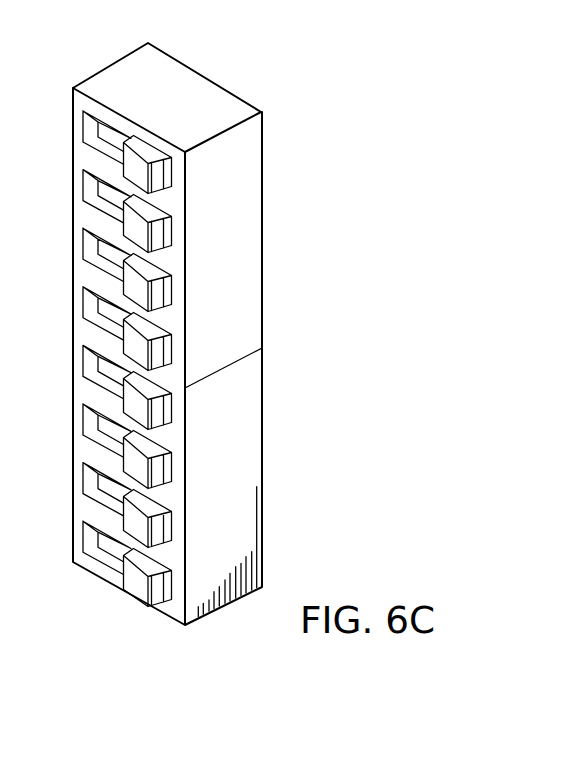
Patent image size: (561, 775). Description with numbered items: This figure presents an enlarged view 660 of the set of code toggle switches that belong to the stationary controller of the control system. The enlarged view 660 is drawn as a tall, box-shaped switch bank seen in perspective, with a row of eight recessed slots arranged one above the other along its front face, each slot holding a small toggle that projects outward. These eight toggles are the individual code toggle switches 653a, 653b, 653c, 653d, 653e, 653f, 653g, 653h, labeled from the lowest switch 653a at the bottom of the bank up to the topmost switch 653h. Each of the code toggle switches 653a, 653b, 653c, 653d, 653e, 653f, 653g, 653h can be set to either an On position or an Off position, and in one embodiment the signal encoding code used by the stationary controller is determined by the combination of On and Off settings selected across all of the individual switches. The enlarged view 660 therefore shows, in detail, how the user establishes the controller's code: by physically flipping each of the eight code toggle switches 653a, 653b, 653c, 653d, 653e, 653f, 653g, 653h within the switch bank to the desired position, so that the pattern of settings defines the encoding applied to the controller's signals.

The enlarged view 660 is at (241, 56).
The code toggle switch 653a is at (160, 575).
The code toggle switch 653b is at (160, 516).
The code toggle switch 653c is at (160, 457).
The code toggle switch 653d is at (160, 398).
The code toggle switch 653e is at (160, 339).
The code toggle switch 653f is at (160, 280).
The code toggle switch 653g is at (160, 221).
The code toggle switch 653h is at (137, 151).